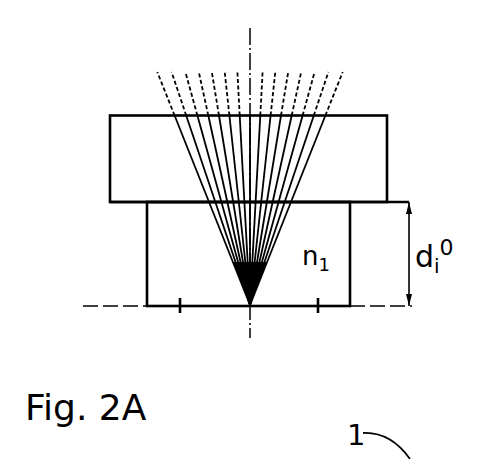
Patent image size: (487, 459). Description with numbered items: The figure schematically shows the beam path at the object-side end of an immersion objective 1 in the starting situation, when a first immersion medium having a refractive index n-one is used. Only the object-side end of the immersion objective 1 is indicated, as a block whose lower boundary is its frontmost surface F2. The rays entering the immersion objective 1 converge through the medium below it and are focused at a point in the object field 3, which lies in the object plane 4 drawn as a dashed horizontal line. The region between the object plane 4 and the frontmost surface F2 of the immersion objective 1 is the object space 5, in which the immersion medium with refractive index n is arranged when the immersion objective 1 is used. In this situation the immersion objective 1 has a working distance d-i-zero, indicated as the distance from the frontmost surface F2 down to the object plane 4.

The immersion objective 1 is at (130, 90).
The frontmost surface F2 is at (133, 202).
The object space 5 is at (112, 266).
The object plane 4 is at (108, 306).
The object field 3 is at (178, 312).